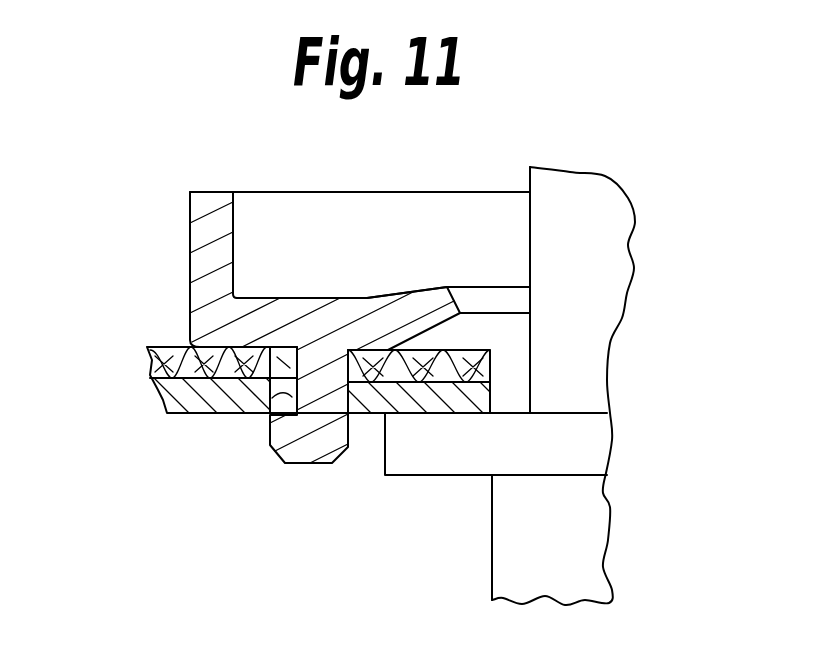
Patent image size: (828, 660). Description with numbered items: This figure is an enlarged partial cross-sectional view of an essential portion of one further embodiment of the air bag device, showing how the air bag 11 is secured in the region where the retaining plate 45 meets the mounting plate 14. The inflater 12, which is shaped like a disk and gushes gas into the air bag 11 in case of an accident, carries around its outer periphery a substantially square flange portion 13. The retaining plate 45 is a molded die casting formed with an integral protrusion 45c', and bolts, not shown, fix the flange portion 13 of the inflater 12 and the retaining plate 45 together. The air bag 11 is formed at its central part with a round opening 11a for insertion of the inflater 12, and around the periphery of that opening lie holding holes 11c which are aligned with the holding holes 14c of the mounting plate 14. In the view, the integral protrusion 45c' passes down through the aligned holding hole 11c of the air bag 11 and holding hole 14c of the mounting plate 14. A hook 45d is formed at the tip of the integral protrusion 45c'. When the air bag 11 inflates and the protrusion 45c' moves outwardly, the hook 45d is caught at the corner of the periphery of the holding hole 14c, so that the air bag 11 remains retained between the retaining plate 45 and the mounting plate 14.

The retaining plate 45 is at (190, 213).
The hook 45d is at (270, 433).
The integral protrusion 45c' is at (321, 507).
The air bag 11 is at (150, 362).
The round opening 11a is at (490, 362).
The holding holes 11c is at (303, 344).
The mounting plate 14 is at (165, 406).
The holding holes 14c is at (256, 402).
The inflater 12 is at (600, 313).
The flange portion 13 is at (590, 440).